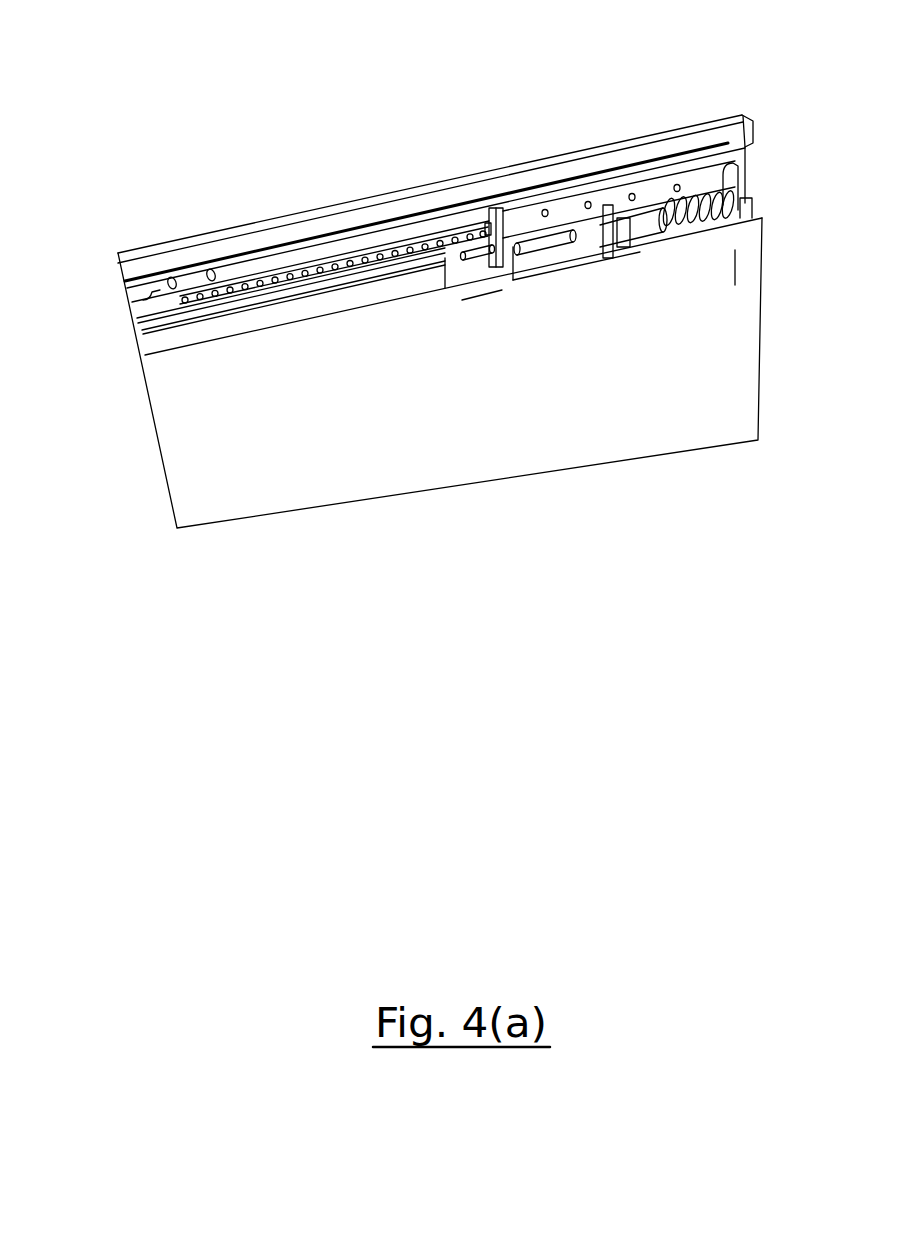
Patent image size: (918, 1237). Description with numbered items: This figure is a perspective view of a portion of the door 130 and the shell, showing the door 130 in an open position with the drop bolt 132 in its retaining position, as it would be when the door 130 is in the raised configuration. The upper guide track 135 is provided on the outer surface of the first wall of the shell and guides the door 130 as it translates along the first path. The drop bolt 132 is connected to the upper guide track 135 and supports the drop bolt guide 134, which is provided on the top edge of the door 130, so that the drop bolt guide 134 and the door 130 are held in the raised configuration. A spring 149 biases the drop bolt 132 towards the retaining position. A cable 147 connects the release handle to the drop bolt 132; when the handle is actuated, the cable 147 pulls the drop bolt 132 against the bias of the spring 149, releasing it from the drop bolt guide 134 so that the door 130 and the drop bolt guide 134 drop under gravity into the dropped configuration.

The door 130 is at (185, 465).
The drop bolt 132 is at (555, 242).
The drop bolt guide 134 is at (605, 243).
The upper guide track 135 is at (293, 265).
The cable 147 is at (433, 243).
The spring 149 is at (700, 203).